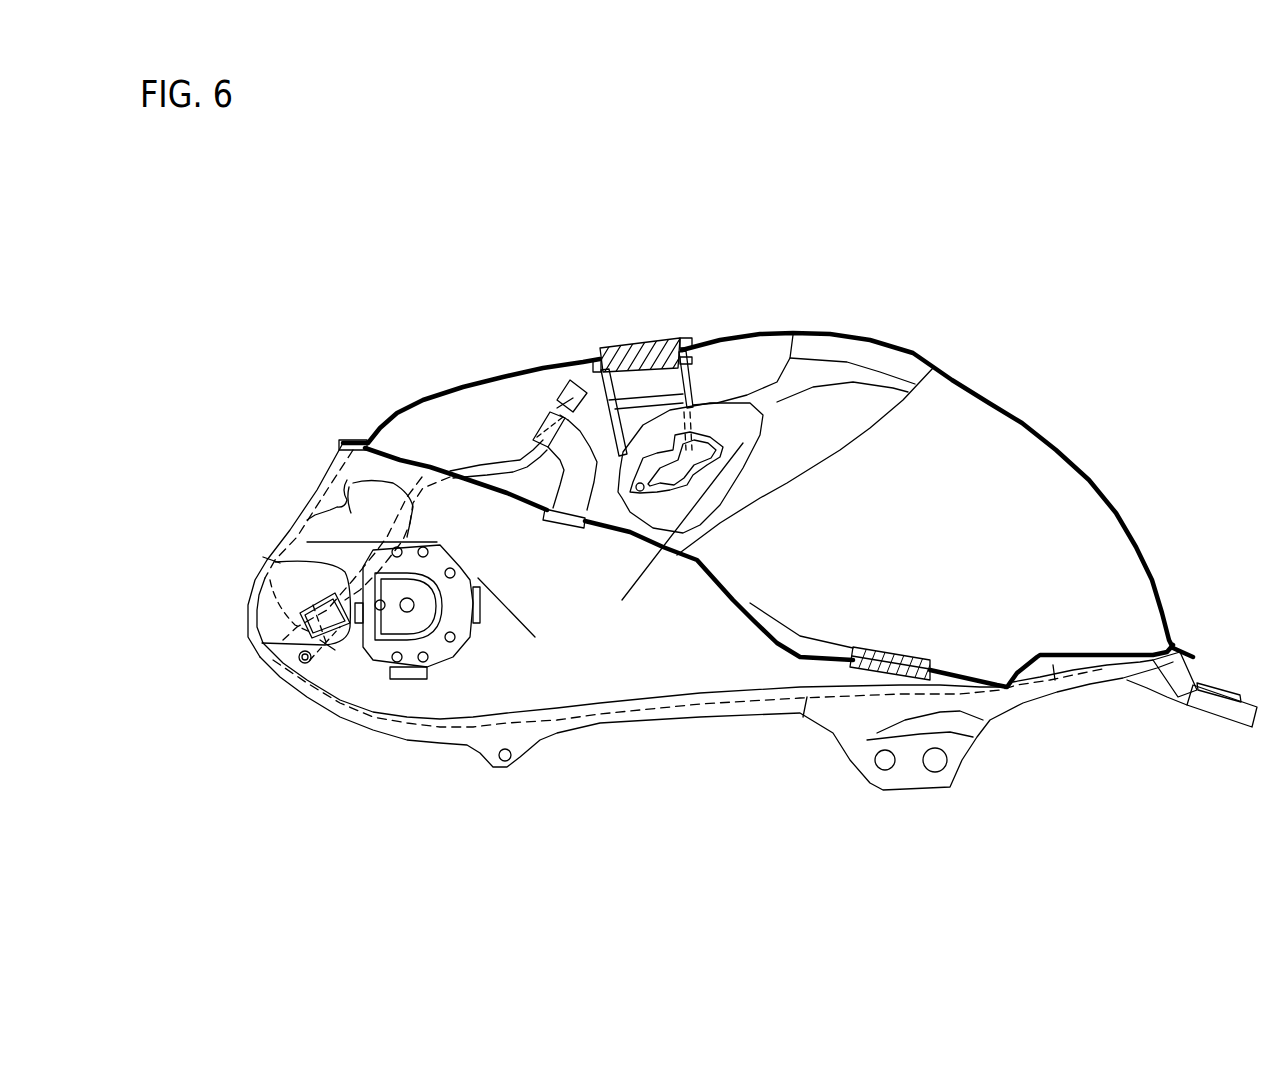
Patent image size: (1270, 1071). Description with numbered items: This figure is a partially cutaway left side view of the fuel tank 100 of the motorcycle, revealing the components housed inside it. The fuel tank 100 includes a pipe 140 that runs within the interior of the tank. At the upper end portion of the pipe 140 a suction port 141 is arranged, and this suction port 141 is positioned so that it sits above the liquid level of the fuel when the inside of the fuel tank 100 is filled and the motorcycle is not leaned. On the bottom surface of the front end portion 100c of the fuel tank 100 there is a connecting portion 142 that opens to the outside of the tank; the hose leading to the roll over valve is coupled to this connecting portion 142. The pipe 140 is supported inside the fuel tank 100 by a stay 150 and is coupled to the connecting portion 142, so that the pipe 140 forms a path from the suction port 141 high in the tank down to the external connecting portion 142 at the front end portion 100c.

The fuel tank 100 is at (1048, 326).
The front end portion 100c is at (273, 625).
The pipe 140 is at (500, 464).
The suction port 141 is at (575, 380).
The connecting portion 142 is at (275, 653).
The stay 150 is at (582, 455).